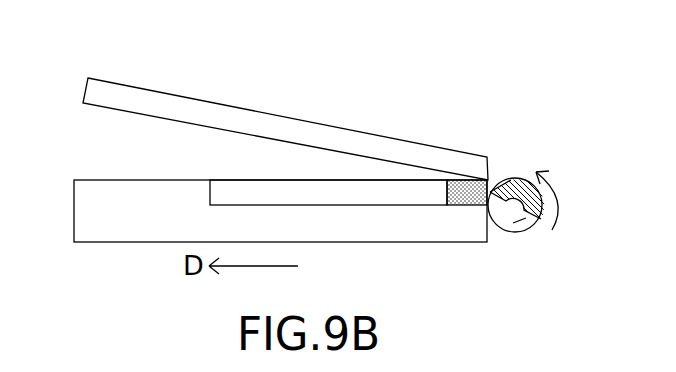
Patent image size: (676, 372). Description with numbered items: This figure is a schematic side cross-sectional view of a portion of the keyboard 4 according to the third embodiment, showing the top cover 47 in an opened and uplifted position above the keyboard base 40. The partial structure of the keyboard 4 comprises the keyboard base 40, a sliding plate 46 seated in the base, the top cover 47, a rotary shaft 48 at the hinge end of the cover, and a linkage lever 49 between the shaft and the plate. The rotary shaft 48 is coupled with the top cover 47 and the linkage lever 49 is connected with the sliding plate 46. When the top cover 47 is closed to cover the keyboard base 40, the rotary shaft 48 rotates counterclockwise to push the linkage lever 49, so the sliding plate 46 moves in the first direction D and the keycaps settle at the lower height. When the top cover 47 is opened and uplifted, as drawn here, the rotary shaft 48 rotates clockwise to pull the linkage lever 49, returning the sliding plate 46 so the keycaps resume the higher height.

The keyboard 4 is at (154, 51).
The keyboard base 40 is at (120, 188).
The sliding plate 46 is at (278, 188).
The top cover 47 is at (277, 118).
The rotary shaft 48 is at (531, 226).
The linkage lever 49 is at (467, 177).